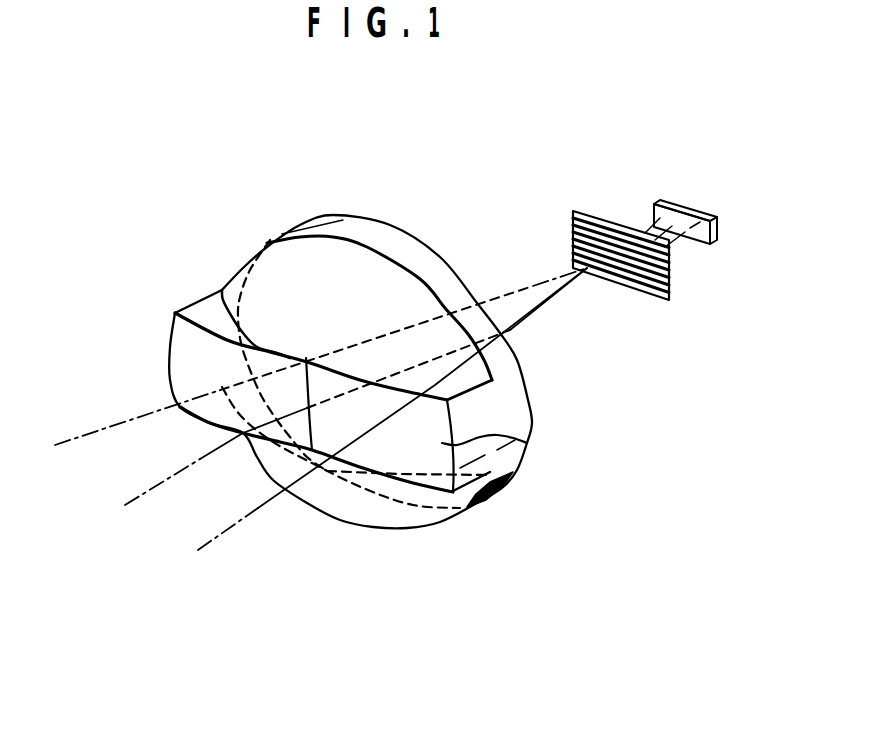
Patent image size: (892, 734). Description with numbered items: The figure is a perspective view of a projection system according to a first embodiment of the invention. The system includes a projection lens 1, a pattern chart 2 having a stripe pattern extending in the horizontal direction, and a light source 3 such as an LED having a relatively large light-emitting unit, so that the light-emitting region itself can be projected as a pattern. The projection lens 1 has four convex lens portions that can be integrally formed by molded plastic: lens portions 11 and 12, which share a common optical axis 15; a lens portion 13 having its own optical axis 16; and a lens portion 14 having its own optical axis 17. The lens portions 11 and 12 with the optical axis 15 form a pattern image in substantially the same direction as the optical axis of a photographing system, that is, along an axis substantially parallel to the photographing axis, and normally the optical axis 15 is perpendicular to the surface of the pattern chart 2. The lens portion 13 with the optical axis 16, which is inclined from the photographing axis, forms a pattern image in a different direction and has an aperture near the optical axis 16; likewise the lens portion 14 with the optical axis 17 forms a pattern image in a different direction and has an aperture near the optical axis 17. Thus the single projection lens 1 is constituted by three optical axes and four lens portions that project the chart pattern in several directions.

The projection lens 1 is at (300, 222).
The pattern chart 2 is at (573, 220).
The light source 3 is at (657, 212).
The lens portion 11 is at (260, 280).
The lens portion 12 is at (367, 518).
The lens portion 13 is at (177, 360).
The lens portion 14 is at (528, 443).
The optical axis 15 is at (160, 492).
The optical axis 16 is at (98, 433).
The optical axis 17 is at (222, 537).